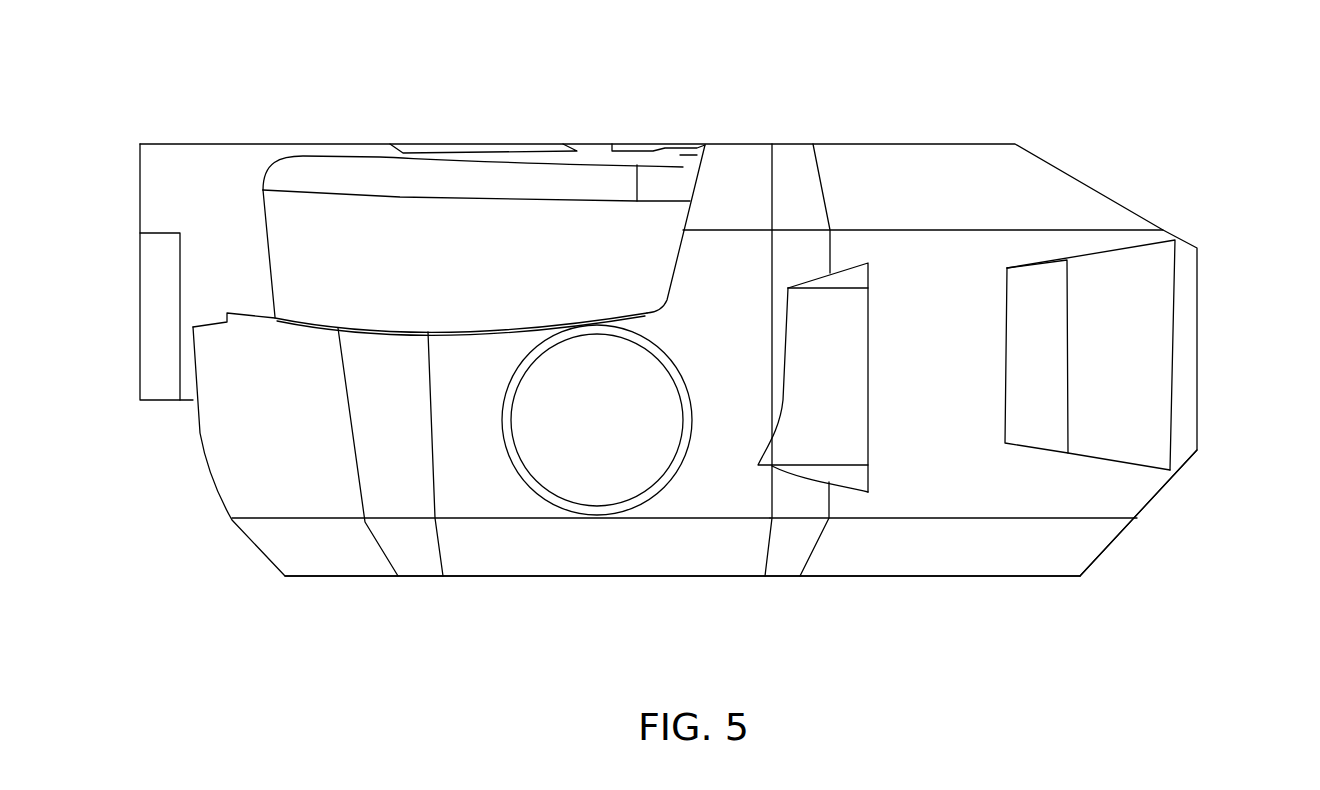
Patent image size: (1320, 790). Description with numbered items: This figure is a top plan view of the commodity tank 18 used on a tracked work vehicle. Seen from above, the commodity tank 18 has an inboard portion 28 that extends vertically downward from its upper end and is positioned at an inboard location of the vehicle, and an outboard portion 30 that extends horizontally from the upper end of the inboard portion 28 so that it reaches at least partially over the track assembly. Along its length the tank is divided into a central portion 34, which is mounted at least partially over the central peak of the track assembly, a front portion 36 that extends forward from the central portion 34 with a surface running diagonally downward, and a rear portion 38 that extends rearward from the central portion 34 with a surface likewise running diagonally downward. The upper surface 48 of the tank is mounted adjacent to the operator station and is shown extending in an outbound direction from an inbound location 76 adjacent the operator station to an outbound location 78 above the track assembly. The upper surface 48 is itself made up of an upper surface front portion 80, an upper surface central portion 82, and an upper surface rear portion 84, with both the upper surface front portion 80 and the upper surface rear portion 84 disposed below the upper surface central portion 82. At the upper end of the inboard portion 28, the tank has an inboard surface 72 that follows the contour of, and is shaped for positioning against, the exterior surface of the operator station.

The commodity tank 18 is at (1158, 132).
The inboard portion 28 is at (1110, 535).
The outboard portion 30 is at (940, 165).
The central portion 34 is at (666, 582).
The front portion 36 is at (350, 582).
The rear portion 38 is at (935, 582).
The upper surface 48 is at (477, 480).
The inboard surface 72 is at (677, 255).
The inbound location 76 is at (700, 145).
The outbound location 78 is at (722, 547).
The upper surface front portion 80 is at (280, 423).
The upper surface central portion 82 is at (593, 462).
The upper surface rear portion 84 is at (890, 482).